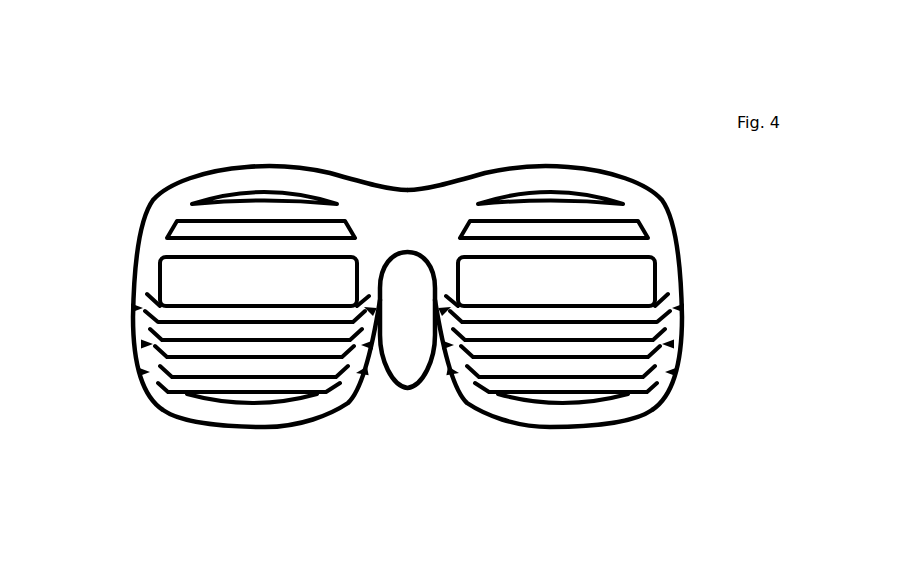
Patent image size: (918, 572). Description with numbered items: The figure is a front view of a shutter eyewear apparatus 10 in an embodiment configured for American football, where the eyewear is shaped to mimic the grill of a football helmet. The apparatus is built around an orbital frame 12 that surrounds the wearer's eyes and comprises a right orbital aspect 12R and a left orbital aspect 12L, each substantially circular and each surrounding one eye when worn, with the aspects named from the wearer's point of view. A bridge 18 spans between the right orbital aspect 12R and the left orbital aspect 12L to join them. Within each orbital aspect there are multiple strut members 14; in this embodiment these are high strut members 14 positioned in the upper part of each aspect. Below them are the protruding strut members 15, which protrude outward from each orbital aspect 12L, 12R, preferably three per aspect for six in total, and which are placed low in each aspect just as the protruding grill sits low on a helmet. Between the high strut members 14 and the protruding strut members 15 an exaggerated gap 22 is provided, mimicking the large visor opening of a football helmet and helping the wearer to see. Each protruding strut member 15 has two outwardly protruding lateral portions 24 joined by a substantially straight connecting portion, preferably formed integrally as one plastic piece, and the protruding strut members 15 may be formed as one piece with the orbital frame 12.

The shutter eyewear apparatus 10 is at (97, 84).
The orbital frame 12 is at (600, 167).
The right orbital aspect 12R is at (240, 152).
The left orbital aspect 12L is at (575, 145).
The strut members 14 is at (347, 247).
The protruding strut members 15 is at (230, 310).
The bridge 18 is at (437, 198).
The exaggerated gap 22 is at (187, 282).
The outwardly protruding lateral portions 24 is at (147, 372).